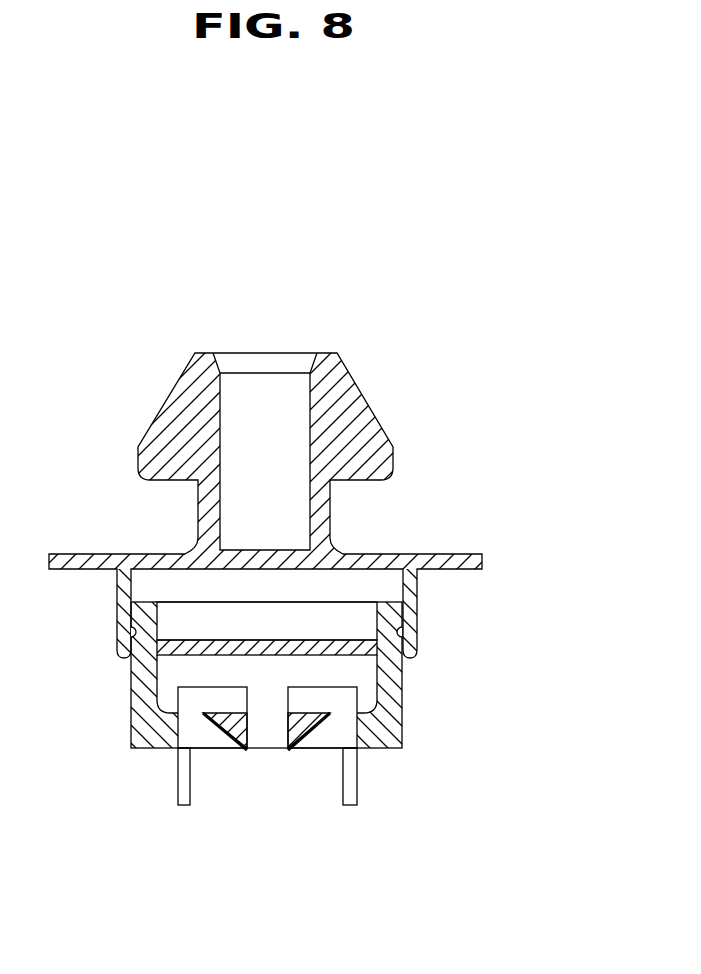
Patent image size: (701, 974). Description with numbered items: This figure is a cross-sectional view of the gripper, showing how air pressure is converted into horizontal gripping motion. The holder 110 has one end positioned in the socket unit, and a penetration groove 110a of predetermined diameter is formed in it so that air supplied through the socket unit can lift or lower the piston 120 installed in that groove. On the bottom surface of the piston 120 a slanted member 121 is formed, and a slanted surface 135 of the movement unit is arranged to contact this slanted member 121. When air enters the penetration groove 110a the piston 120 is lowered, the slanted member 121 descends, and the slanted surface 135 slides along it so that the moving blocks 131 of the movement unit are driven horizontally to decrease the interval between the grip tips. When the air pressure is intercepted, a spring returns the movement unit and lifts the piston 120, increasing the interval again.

The holder 110 is at (355, 403).
The penetration groove 110a is at (270, 388).
The piston 120 is at (422, 710).
The slanted member 121 is at (203, 752).
The moving blocks 131 is at (178, 790).
The slanted surface 135 is at (322, 738).